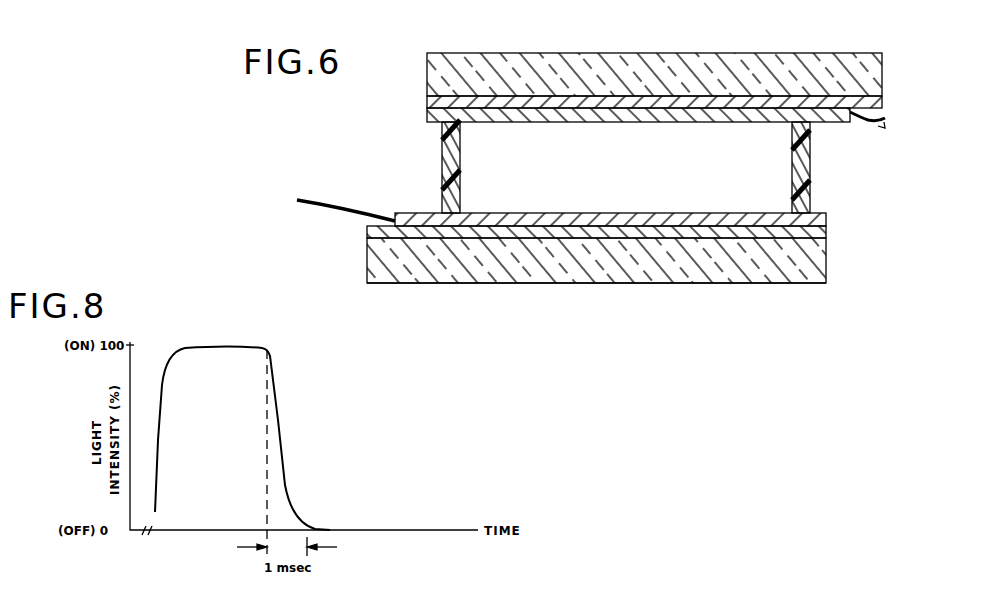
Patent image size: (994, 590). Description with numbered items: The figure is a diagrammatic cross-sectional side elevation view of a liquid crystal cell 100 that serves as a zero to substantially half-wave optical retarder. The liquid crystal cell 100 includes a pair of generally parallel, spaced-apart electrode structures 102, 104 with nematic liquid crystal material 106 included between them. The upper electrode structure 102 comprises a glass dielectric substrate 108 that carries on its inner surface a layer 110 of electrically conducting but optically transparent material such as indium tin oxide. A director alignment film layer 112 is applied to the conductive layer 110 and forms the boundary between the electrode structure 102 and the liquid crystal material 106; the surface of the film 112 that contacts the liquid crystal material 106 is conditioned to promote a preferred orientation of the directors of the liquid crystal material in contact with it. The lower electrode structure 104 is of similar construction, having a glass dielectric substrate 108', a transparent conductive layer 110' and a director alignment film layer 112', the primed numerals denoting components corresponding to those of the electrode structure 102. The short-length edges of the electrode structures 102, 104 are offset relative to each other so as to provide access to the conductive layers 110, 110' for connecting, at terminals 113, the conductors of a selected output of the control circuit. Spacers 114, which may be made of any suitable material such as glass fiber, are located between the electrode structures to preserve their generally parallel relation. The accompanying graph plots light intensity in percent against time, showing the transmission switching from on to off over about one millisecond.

The liquid crystal cell 100 is at (366, 284).
The electrode structure 102 is at (427, 69).
The electrode structure 104 is at (526, 284).
The nematic liquid crystal material 106 is at (600, 176).
The glass dielectric substrate 108 is at (654, 60).
The glass dielectric substrate 108' is at (561, 260).
The conductive layer 110 is at (619, 97).
The conductive layer 110' is at (563, 228).
The director alignment film layer 112 is at (603, 119).
The director alignment film layer 112' is at (578, 203).
The terminals 113 is at (304, 200).
The spacers 114 is at (458, 161).